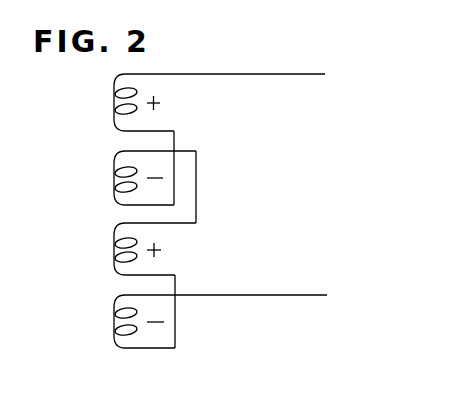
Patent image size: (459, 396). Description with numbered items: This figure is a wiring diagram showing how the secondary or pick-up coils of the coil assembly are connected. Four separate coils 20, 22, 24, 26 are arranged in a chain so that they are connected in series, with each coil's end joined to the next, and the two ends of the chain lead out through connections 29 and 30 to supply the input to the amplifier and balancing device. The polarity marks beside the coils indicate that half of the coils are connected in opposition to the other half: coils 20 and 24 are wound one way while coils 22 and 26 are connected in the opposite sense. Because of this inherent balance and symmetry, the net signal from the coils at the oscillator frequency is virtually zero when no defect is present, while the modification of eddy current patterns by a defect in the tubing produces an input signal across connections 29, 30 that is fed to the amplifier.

The pick-up coil 20 is at (114, 102).
The pick-up coil 22 is at (114, 176).
The pick-up coil 24 is at (114, 245).
The pick-up coil 26 is at (114, 318).
The connection 29 is at (275, 74).
The connection 30 is at (281, 295).